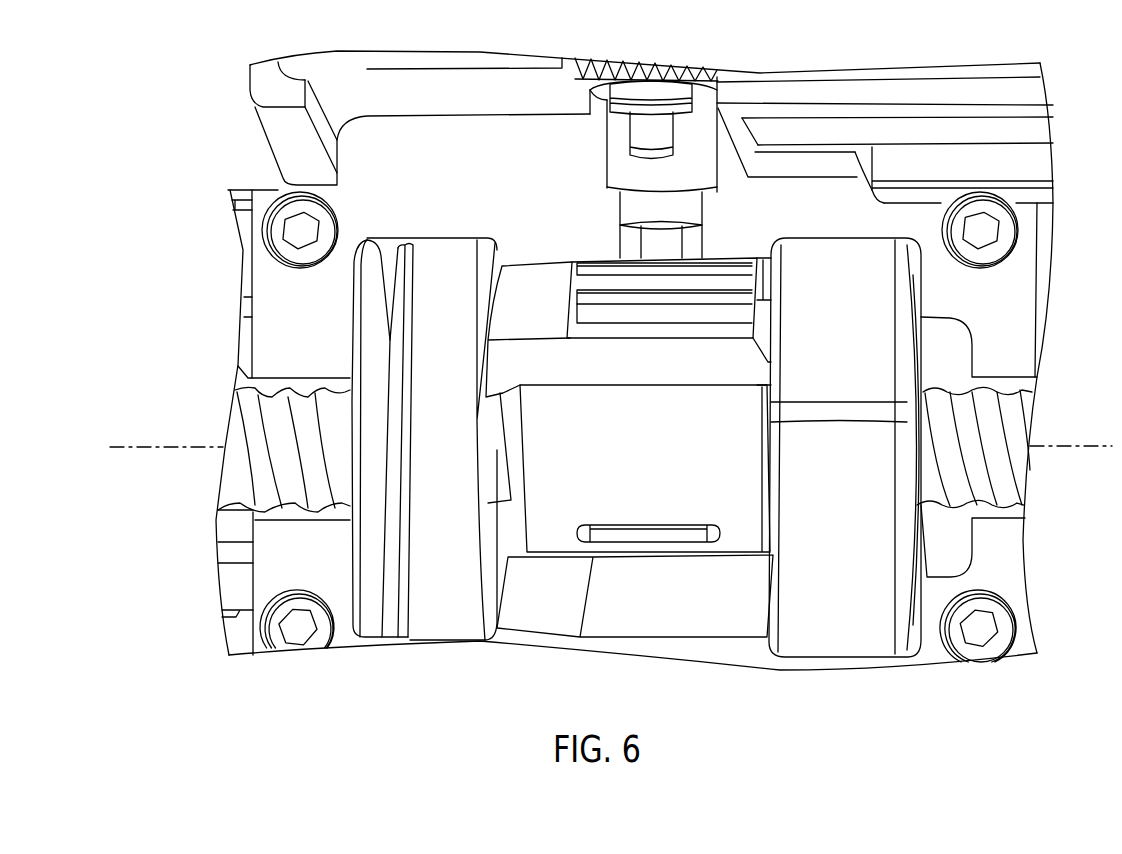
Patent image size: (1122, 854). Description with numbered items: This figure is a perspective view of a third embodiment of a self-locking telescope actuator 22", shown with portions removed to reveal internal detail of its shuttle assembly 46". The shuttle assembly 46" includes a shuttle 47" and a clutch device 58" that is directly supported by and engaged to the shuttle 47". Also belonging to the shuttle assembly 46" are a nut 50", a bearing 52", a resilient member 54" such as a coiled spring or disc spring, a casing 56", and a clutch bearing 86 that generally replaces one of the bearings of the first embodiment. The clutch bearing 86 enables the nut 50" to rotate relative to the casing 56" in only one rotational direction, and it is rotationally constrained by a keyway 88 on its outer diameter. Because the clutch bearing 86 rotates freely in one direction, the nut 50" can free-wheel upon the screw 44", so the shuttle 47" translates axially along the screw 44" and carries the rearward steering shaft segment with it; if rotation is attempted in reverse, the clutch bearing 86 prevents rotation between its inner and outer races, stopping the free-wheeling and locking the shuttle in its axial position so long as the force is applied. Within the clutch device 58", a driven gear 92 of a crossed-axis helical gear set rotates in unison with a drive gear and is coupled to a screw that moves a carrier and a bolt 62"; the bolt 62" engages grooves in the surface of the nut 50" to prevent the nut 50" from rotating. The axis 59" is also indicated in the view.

The self-locking telescope actuator 22 is at (302, 708).
The screw 44 is at (272, 512).
The shuttle assembly 46 is at (423, 693).
The shuttle 47 is at (252, 248).
The nut 50 is at (743, 257).
The bearing 52 is at (452, 634).
The resilient member 54 is at (378, 632).
The casing 56 is at (908, 203).
The clutch device 58 is at (249, 78).
The axis 59 is at (1073, 453).
The bolt 62 is at (683, 249).
The clutch bearing 86 is at (858, 660).
The keyway 88 is at (850, 412).
The driven gear 92 is at (719, 86).